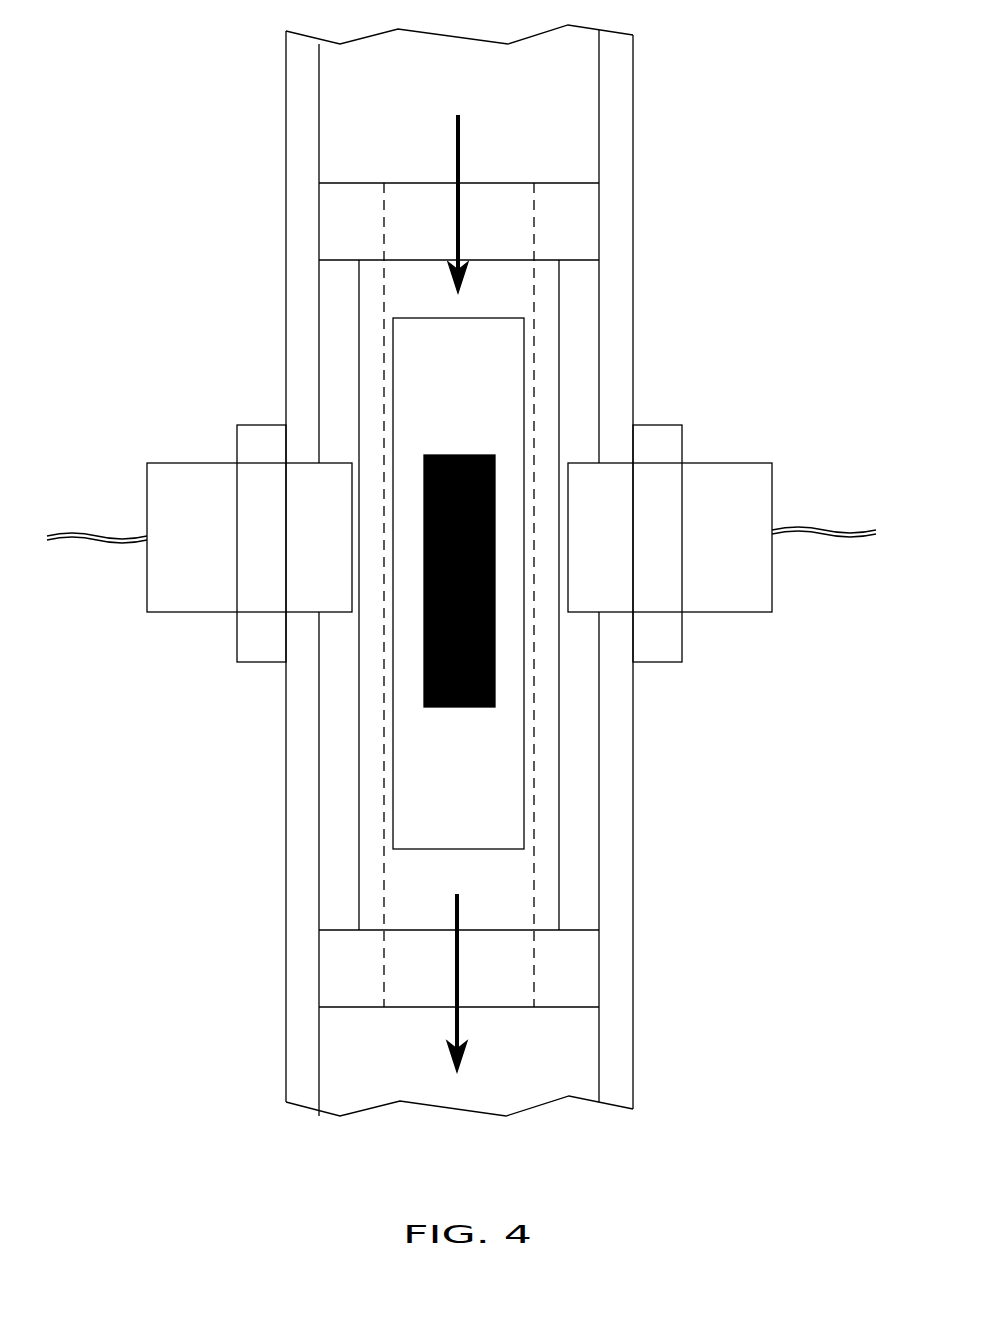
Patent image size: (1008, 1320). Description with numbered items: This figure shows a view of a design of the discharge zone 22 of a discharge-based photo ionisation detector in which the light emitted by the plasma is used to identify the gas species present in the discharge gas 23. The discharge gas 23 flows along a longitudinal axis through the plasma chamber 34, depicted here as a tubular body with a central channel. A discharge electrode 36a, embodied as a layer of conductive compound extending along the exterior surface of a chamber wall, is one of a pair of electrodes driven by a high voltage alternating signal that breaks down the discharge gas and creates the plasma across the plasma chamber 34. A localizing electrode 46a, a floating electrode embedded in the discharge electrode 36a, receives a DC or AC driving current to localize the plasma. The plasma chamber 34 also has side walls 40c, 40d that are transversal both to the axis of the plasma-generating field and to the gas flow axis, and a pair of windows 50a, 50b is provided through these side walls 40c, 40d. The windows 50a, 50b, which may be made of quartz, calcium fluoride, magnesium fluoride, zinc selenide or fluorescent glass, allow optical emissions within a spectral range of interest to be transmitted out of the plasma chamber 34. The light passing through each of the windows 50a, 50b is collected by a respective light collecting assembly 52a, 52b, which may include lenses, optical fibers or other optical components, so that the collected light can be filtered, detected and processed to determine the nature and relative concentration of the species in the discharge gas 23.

The discharge zone 22 is at (216, 262).
The discharge gas 23 is at (460, 133).
The plasma chamber 34 is at (499, 875).
The discharge electrode 36a is at (408, 803).
The side wall 40c is at (336, 369).
The side wall 40d is at (579, 410).
The localizing electrode 46a is at (495, 676).
The window 50a is at (308, 577).
The window 50b is at (608, 577).
The light collecting assembly 52a is at (96, 510).
The light collecting assembly 52b is at (829, 498).